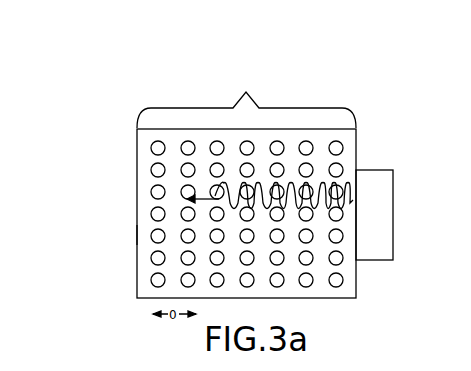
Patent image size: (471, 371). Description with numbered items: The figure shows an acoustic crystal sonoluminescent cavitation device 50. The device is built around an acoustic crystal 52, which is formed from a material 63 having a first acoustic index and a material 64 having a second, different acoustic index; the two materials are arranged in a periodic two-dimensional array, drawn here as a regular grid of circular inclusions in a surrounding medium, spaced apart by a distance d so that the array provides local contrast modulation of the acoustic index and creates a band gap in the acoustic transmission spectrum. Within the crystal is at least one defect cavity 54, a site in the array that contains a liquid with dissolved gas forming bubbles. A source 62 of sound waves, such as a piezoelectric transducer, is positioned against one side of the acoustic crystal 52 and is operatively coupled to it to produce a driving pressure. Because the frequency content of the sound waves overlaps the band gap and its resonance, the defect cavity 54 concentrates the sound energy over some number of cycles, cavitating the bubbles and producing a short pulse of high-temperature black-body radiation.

The acoustic crystal sonoluminescent cavitation device 50 is at (86, 144).
The acoustic crystal 52 is at (238, 84).
The defect cavity 54 is at (178, 259).
The source of sound waves 62 is at (386, 187).
The material having a first acoustic index 63 is at (135, 225).
The material having a second acoustic index 64 is at (143, 184).